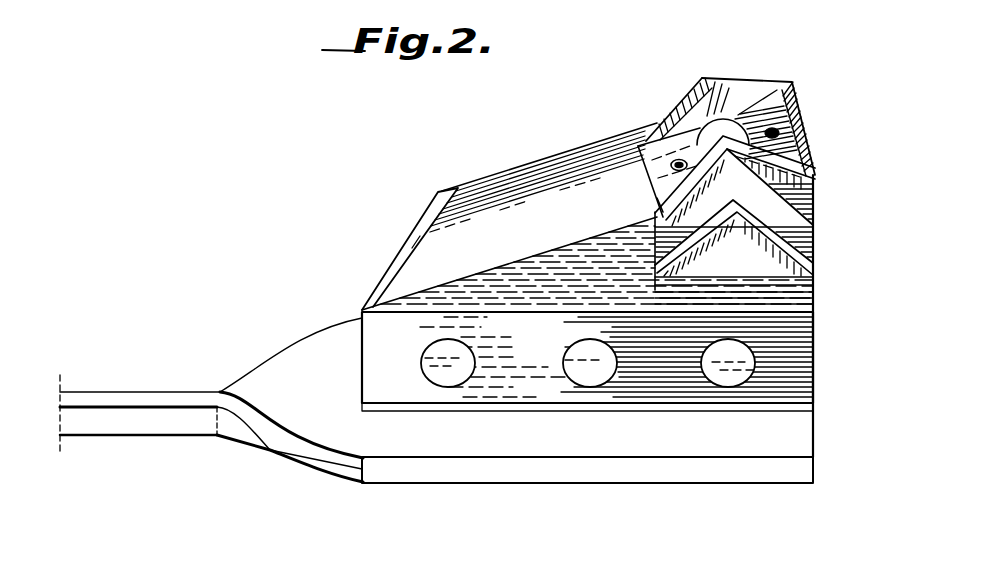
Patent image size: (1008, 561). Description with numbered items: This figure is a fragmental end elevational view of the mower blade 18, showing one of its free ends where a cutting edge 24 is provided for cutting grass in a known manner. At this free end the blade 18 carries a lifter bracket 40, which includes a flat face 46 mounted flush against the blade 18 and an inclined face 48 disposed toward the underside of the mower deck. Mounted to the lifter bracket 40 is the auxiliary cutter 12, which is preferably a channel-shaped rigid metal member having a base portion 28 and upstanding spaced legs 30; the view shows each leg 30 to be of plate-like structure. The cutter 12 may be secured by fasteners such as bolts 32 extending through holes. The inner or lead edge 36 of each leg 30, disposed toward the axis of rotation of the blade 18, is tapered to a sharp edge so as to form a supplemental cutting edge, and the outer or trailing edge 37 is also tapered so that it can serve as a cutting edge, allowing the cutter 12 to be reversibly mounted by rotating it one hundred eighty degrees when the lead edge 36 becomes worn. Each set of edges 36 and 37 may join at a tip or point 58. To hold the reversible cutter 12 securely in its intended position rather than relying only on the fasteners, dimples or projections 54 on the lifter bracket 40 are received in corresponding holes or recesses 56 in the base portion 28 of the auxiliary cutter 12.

The auxiliary cutter 12 is at (755, 88).
The blade 18 is at (135, 390).
The cutting edge 24 is at (637, 470).
The base portion 28 is at (790, 110).
The legs 30 is at (733, 102).
The bolts 32 is at (662, 127).
The lead edge 36 is at (675, 105).
The trailing edge 37 is at (712, 95).
The lifter bracket 40 is at (432, 212).
The flat face 46 is at (800, 380).
The inclined face 48 is at (488, 202).
The dimples or projections 54 is at (650, 198).
The holes or recesses 56 is at (638, 145).
The tip or point 58 is at (702, 78).